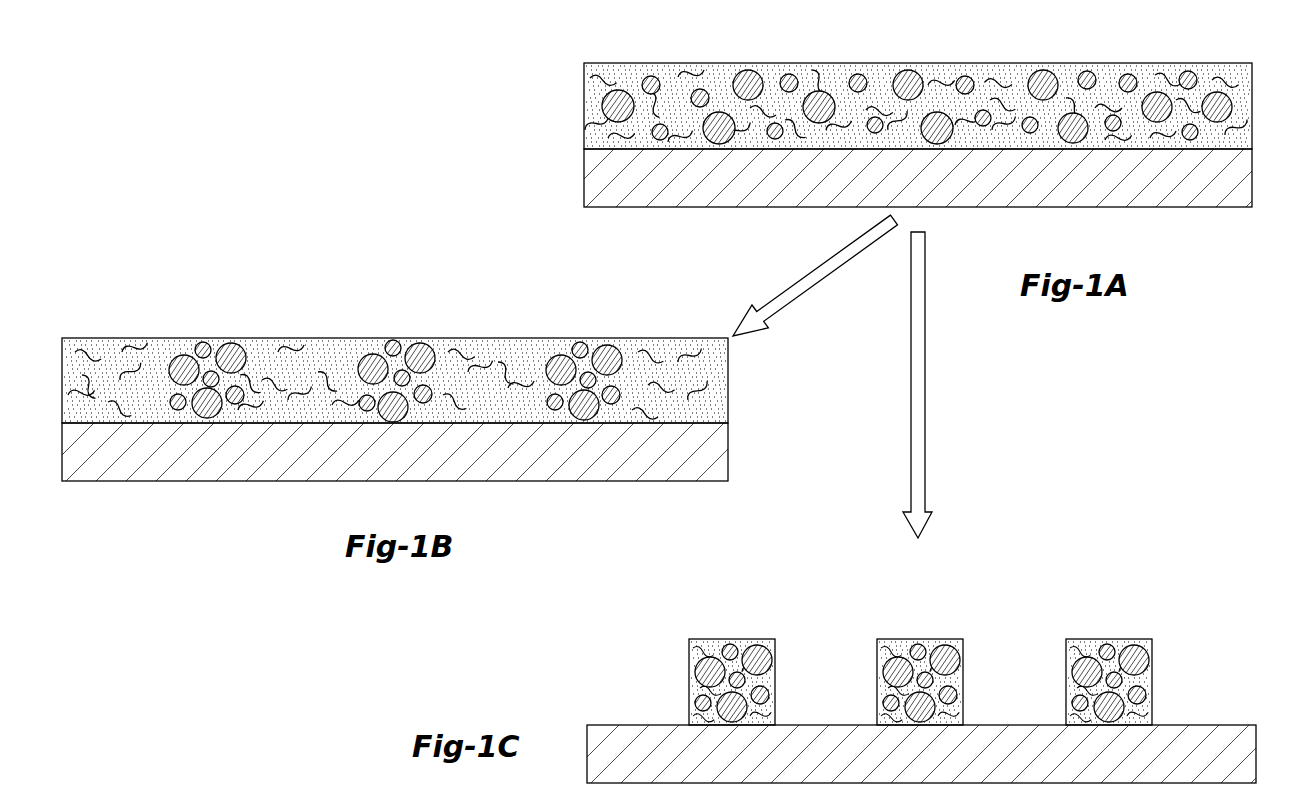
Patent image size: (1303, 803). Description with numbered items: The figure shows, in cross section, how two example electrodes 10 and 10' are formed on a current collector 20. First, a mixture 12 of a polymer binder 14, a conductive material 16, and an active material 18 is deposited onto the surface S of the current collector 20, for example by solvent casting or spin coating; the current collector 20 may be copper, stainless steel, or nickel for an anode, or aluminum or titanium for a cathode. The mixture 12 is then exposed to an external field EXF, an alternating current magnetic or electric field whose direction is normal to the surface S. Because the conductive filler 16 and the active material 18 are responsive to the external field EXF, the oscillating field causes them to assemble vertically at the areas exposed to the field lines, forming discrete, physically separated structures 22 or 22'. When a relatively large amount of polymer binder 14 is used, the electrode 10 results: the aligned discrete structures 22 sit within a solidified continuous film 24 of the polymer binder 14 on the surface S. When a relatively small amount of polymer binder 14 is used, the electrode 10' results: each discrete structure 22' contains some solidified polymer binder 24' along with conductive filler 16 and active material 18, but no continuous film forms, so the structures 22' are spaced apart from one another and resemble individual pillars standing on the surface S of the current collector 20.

In FIG. 1B, the electrode 10 is at (395, 411).
In FIG. 1C, the electrode 10' is at (886, 657).
In FIG. 1A, the mixture 12 is at (1170, 58).
In FIG. 1A, the polymer binder 14 is at (834, 90).
In FIG. 1B, the polymer binder 14 is at (500, 356).
In FIG. 1A, the conductive material 16 is at (965, 77).
In FIG. 1B, the conductive material 16 is at (178, 404).
In FIG. 1C, the conductive material 16 is at (728, 648).
In FIG. 1A, the active material 18 is at (750, 83).
In FIG. 1B, the active material 18 is at (183, 368).
In FIG. 1C, the active material 18 is at (710, 672).
In FIG. 1A, the current collector 20 is at (1134, 178).
In FIG. 1B, the current collector 20 is at (697, 453).
In FIG. 1C, the current collector 20 is at (605, 737).
In FIG. 1B, the discrete structures 22 is at (378, 411).
In FIG. 1C, the discrete structures 22' is at (930, 657).
In FIG. 1B, the continuous film 24 is at (395, 354).
In FIG. 1C, the solidified polymer binder 24' is at (954, 682).
In FIG. 1A, the surface S is at (1030, 134).
In FIG. 1B, the external field EXF is at (205, 306).
In FIG. 1C, the external field EXF is at (730, 606).